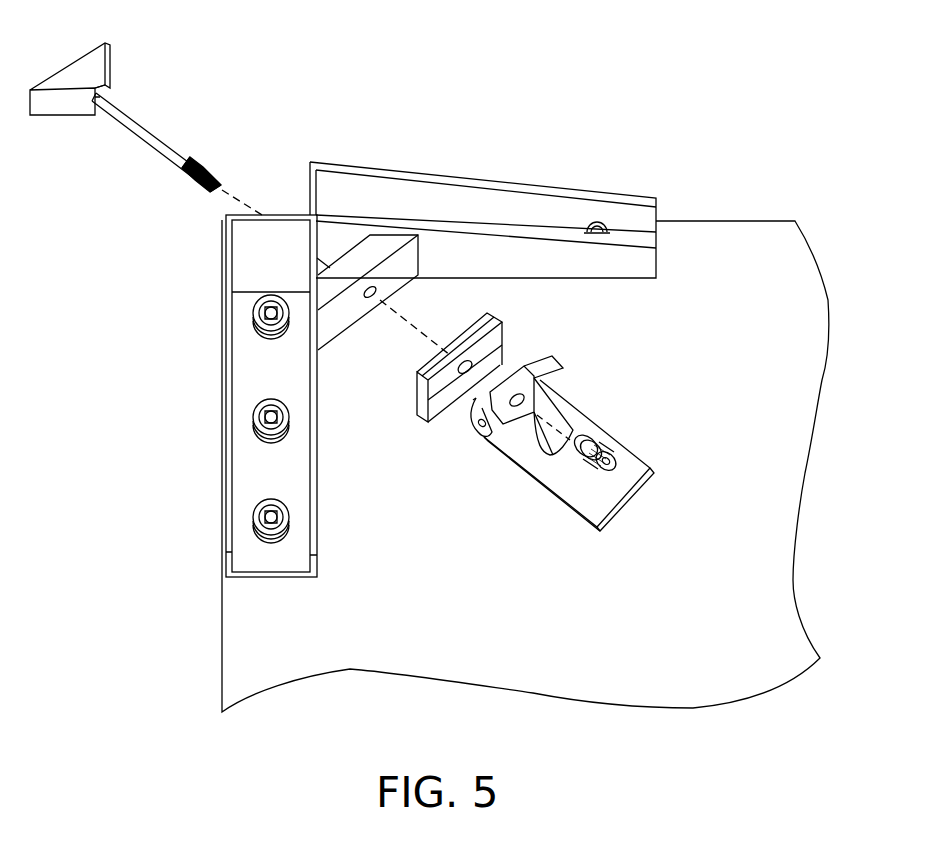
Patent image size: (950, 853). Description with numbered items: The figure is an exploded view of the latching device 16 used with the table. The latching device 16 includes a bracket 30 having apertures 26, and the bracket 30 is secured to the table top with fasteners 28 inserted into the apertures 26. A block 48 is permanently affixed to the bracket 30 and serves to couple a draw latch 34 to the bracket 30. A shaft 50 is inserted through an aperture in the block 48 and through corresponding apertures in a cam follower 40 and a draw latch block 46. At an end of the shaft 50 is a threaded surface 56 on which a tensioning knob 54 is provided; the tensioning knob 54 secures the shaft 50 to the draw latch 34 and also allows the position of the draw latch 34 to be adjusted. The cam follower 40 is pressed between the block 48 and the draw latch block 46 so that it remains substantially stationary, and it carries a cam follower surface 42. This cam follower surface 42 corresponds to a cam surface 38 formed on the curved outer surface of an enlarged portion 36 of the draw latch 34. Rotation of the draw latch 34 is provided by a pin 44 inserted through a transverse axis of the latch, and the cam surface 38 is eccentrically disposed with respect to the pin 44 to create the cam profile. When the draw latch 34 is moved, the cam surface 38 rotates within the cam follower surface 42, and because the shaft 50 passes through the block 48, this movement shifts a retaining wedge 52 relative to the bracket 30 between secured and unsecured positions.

The latching device 16 is at (645, 170).
The apertures 26 is at (262, 538).
The fasteners 28 is at (258, 522).
The bracket 30 is at (602, 263).
The draw latch 34 is at (569, 465).
The enlarged portion 36 is at (477, 428).
The cam surface 38 is at (473, 400).
The cam follower 40 is at (420, 397).
The cam follower surface 42 is at (442, 398).
The pin 44 is at (487, 430).
The draw latch block 46 is at (532, 368).
The block 48 is at (345, 318).
The shaft 50 is at (152, 135).
The retaining wedge 52 is at (77, 72).
The tensioning knob 54 is at (600, 447).
The threaded surface 56 is at (205, 167).